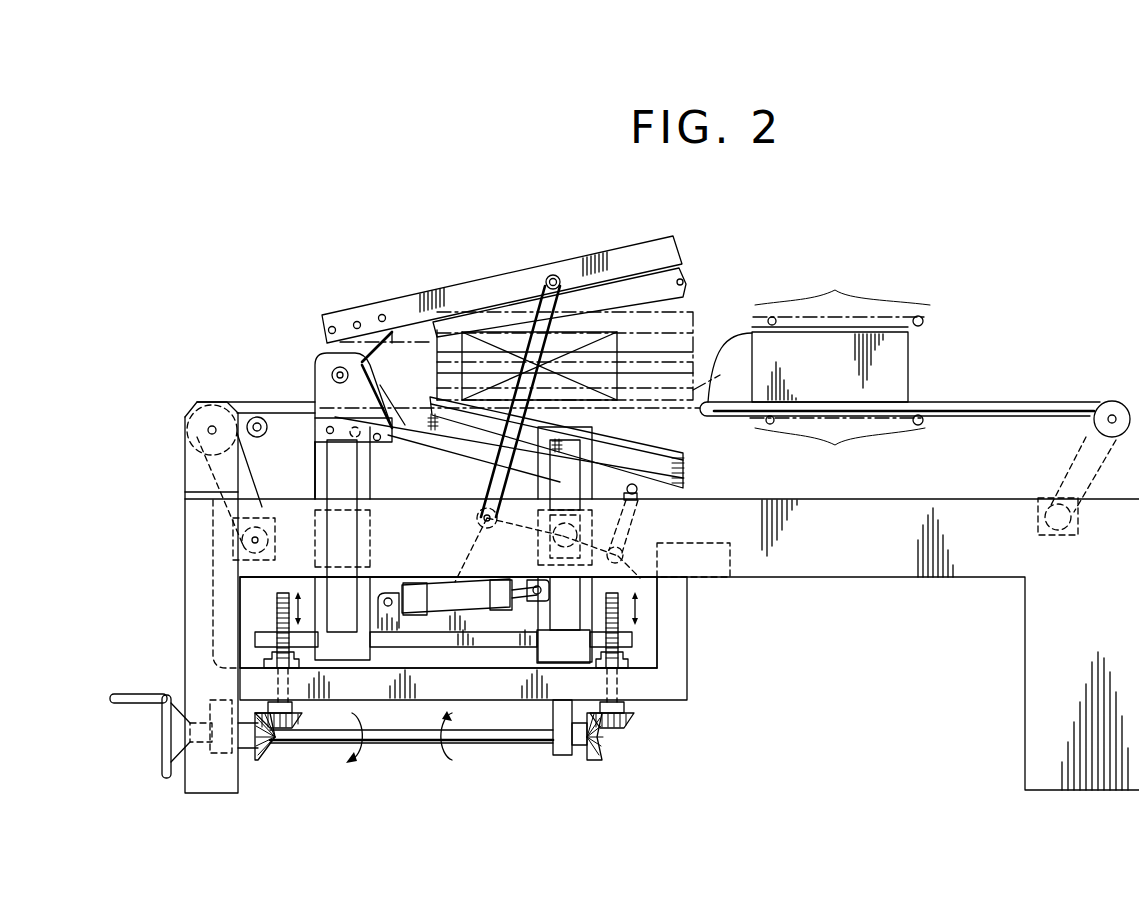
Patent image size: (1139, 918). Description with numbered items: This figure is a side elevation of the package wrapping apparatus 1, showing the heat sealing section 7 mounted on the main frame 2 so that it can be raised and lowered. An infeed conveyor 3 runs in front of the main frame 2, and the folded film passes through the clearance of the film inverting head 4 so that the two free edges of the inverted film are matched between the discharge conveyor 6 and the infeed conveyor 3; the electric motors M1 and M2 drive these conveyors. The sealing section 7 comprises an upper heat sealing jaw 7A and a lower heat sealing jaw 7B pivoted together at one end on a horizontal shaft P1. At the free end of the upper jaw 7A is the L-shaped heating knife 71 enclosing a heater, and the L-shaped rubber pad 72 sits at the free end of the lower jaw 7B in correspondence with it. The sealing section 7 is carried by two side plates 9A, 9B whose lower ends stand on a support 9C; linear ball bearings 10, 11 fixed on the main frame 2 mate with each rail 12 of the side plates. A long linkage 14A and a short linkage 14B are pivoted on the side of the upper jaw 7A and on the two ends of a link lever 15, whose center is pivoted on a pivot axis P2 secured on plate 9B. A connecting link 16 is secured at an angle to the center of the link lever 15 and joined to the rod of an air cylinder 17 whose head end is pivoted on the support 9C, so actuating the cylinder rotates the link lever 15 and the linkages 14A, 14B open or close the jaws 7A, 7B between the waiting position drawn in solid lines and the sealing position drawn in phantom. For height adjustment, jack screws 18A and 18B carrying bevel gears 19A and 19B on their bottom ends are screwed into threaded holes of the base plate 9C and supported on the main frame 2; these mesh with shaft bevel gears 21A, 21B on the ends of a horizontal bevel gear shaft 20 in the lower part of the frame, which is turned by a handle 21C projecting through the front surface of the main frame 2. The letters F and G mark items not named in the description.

The package wrapping apparatus 1 is at (970, 259).
The main frame 2 is at (876, 537).
The infeed conveyor 3 is at (970, 404).
The film inverting head 4 is at (840, 366).
The discharge conveyor 6 is at (295, 402).
The heat sealing section 7 is at (529, 260).
The upper heat sealing jaw 7A is at (594, 256).
The lower heat sealing jaw 7B is at (684, 486).
The side plate 9A is at (315, 464).
The side plate 9B is at (532, 476).
The support 9C is at (500, 647).
The linear ball bearing 10 is at (366, 543).
The linear ball bearing 11 is at (522, 576).
The rail 12 is at (362, 480).
The long linkage 14A is at (542, 318).
The short linkage 14B is at (659, 523).
The link lever 15 is at (445, 584).
The connecting link 16 is at (564, 545).
The air cylinder 17 is at (437, 640).
The jack screw 18A is at (277, 616).
The jack screw 18B is at (622, 618).
The bevel gear 19A is at (297, 730).
The bevel gear 19B is at (623, 720).
The bevel gear shaft 20 is at (393, 737).
The shaft bevel gear 21A is at (262, 754).
The shaft bevel gear 21B is at (597, 753).
The handle 21C is at (150, 720).
The L-shaped heating knife 71 is at (685, 288).
The L-shaped rubber pad 72 is at (684, 454).
The sheet stack F is at (713, 385).
The glass sheet G is at (808, 364).
The electric motor M1 is at (1077, 508).
The electric motor M2 is at (233, 548).
The horizontal shaft P1 is at (334, 372).
The pivot axis P2 is at (672, 582).